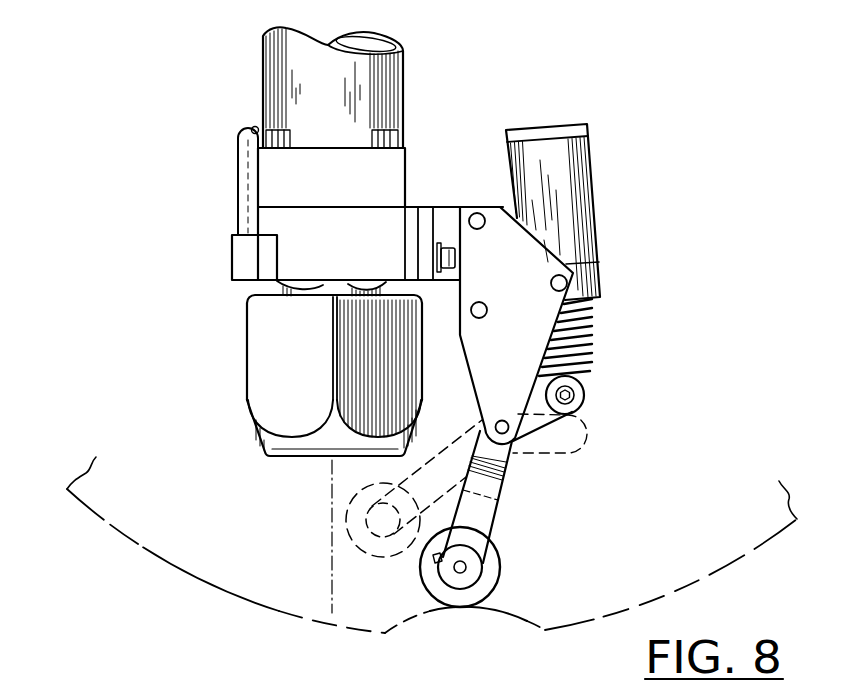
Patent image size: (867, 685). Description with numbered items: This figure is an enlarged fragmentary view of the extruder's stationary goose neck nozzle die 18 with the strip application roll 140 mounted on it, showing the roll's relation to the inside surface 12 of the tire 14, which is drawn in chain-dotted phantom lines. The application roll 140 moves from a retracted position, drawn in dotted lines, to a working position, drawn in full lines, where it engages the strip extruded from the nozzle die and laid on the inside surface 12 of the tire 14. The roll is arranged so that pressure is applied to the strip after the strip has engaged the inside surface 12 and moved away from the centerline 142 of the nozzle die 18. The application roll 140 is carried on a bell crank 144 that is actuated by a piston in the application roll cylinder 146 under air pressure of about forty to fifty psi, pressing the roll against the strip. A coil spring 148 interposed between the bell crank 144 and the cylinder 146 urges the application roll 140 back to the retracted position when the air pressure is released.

The inside surface 12 is at (277, 614).
The tire 14 is at (126, 541).
The goose neck nozzle die 18 is at (275, 79).
The strip application roll 140 is at (492, 568).
The centerline 142 is at (331, 540).
The bell crank 144 is at (492, 514).
The application roll cylinder 146 is at (584, 181).
The coil spring 148 is at (588, 333).